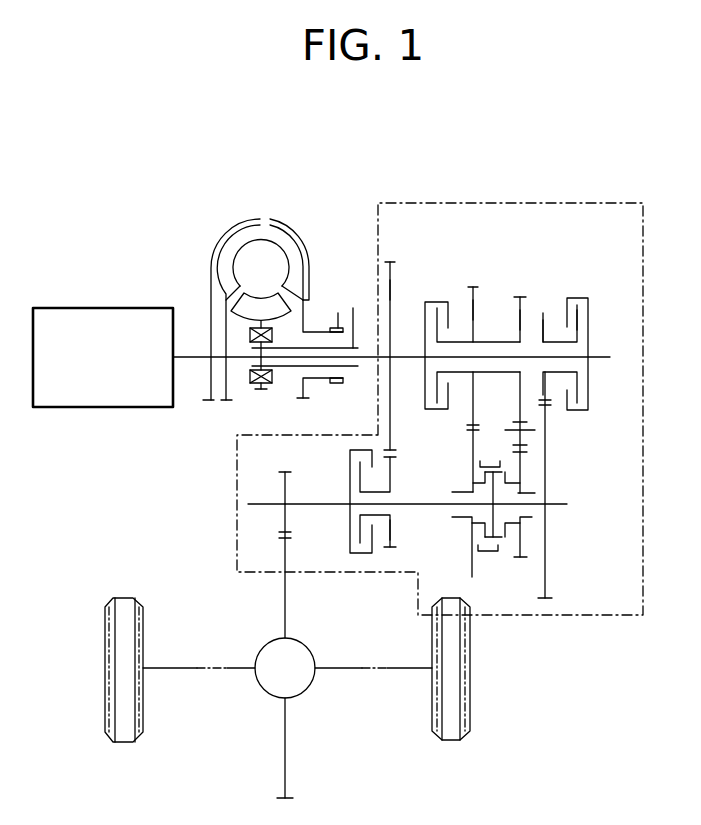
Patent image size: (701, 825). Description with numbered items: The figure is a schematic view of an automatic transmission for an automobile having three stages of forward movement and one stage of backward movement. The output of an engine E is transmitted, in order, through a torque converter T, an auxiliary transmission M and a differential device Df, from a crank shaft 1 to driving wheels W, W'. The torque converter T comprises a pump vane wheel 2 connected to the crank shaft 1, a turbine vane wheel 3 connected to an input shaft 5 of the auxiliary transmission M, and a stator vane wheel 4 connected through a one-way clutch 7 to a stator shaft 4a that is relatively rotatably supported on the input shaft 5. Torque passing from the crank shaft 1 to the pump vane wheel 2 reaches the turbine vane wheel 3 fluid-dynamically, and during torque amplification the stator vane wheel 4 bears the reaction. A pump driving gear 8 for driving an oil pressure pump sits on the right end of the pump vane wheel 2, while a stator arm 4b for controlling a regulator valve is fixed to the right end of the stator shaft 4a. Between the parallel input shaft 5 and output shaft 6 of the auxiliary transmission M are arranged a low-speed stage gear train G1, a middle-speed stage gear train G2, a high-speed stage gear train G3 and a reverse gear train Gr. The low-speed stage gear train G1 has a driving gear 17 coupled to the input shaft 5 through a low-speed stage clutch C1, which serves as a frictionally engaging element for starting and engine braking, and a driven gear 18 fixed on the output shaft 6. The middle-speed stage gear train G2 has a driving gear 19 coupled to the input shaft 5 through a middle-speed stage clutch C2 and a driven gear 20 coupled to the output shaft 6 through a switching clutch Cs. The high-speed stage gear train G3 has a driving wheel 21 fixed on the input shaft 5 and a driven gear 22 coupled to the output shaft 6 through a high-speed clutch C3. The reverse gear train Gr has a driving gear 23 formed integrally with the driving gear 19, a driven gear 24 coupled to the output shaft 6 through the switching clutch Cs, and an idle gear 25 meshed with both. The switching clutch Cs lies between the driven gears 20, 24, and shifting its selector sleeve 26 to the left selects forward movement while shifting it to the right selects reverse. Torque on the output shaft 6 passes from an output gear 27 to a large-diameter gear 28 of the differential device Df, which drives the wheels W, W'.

The engine E is at (112, 369).
The torque converter T is at (256, 196).
The auxiliary transmission M is at (501, 200).
The crank shaft 1 is at (190, 359).
The pump vane wheel 2 is at (300, 254).
The turbine vane wheel 3 is at (233, 245).
The stator vane wheel 4 is at (288, 307).
The stator shaft 4a is at (342, 350).
The stator arm 4b is at (353, 308).
The input shaft 5 is at (288, 359).
The output shaft 6 is at (260, 504).
The one-way clutch 7 is at (250, 335).
The pump driving gear 8 is at (337, 311).
The driving gear 17 is at (566, 316).
The driven gear 18 is at (547, 433).
The driving gear 19 is at (477, 304).
The driven gear 20 is at (472, 443).
The driving wheel 21 is at (391, 293).
The driven gear 22 is at (392, 530).
The driving gear 23 is at (521, 316).
The driven gear 24 is at (523, 468).
The idle gear 25 is at (518, 426).
The selector sleeve 26 is at (486, 547).
The output gear 27 is at (284, 486).
The large-diameter gear 28 is at (288, 597).
The low-speed stage gear train G1 is at (546, 326).
The middle-speed stage gear train G2 is at (474, 285).
The high-speed stage gear train G3 is at (392, 258).
The reverse gear train Gr is at (521, 294).
The low-speed stage clutch C1 is at (590, 315).
The middle-speed stage clutch C2 is at (436, 304).
The high-speed clutch C3 is at (351, 522).
The switching clutch Cs is at (498, 560).
The differential device Df is at (307, 651).
The driving wheel W is at (124, 692).
The driving wheel W' is at (452, 693).